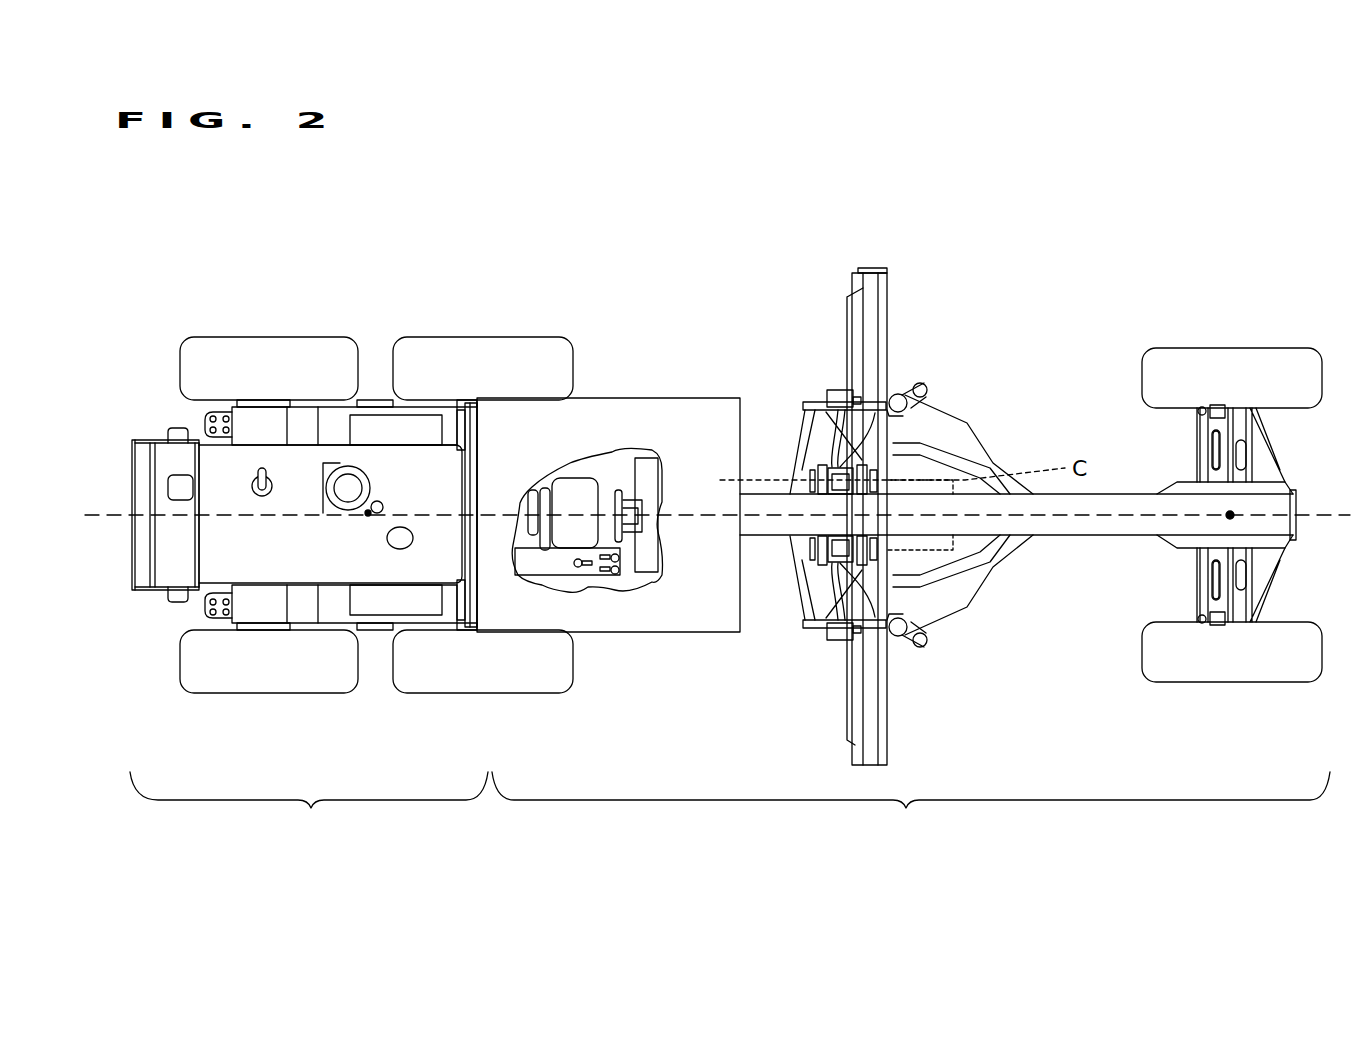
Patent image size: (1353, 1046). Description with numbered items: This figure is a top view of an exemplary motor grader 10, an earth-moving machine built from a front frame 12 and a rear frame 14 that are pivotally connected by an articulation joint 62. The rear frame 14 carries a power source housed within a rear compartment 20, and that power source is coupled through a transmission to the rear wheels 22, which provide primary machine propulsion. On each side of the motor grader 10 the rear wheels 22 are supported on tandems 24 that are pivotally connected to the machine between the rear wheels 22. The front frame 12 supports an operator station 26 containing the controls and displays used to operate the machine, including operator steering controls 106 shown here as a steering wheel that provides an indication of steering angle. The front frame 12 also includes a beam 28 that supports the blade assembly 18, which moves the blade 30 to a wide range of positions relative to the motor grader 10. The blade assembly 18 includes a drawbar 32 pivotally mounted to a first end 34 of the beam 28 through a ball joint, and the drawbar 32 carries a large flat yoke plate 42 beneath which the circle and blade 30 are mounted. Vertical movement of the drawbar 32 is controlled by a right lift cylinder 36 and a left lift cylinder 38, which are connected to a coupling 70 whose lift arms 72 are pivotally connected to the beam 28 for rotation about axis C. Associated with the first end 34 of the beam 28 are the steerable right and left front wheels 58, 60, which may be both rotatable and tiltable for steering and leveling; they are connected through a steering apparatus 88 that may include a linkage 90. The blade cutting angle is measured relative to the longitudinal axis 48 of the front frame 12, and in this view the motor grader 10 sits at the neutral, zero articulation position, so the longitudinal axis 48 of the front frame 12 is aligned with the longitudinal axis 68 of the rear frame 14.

The motor grader 10 is at (699, 243).
The front frame 12 is at (911, 806).
The rear frame 14 is at (309, 805).
The blade assembly 18 is at (1018, 337).
The rear compartment 20 is at (203, 534).
The rear wheels 22 is at (250, 337).
The tandems 24 is at (381, 388).
The operator station 26 is at (706, 398).
The beam 28 is at (1105, 546).
The blade 30 is at (888, 280).
The drawbar 32 is at (975, 445).
The first end 34 is at (1278, 503).
The right lift cylinder 36 is at (928, 640).
The left lift cylinder 38 is at (925, 395).
The yoke plate 42 is at (975, 598).
The longitudinal axis 48 is at (1316, 515).
The right wheel 58 is at (1232, 682).
The left wheel 60 is at (1212, 348).
The articulation joint 62 is at (482, 487).
The longitudinal axis 68 is at (128, 510).
The coupling 70 is at (820, 470).
The lift arms 72 is at (836, 390).
The steering apparatus 88 is at (1170, 430).
The linkage 90 is at (1190, 472).
The operator steering controls 106 is at (633, 455).